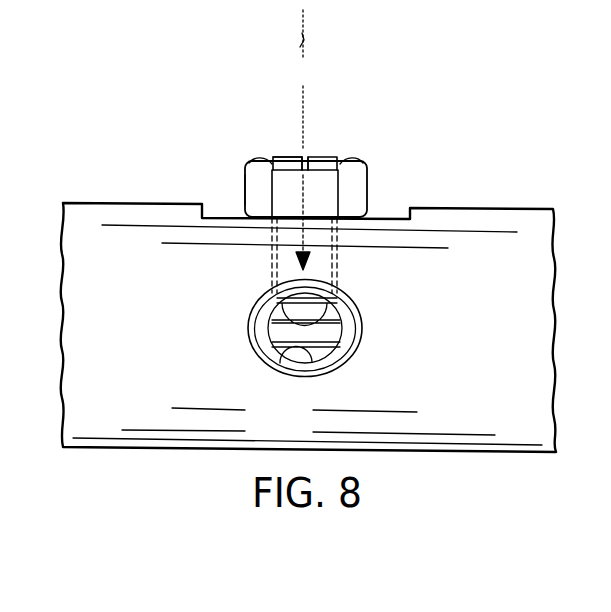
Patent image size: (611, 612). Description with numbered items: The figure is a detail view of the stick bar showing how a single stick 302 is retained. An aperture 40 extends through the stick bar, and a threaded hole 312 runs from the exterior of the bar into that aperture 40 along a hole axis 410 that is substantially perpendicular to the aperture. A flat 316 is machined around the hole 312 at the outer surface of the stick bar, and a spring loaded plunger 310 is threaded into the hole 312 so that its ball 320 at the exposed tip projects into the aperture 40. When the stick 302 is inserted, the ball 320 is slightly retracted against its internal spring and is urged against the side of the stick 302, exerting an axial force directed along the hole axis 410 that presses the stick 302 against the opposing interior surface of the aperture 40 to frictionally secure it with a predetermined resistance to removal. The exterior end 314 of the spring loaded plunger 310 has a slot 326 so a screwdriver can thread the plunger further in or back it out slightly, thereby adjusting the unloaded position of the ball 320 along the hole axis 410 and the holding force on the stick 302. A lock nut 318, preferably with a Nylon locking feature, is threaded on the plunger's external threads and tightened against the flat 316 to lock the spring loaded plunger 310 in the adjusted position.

The aperture 40 is at (275, 365).
The stick 302 is at (330, 332).
The spring loaded plunger 310 is at (322, 157).
The threaded hole 312 is at (262, 270).
The exterior end 314 is at (285, 155).
The flat 316 is at (392, 218).
The lock nut 318 is at (245, 190).
The ball 320 is at (317, 317).
The slot 326 is at (308, 148).
The hole axis 410 is at (305, 40).